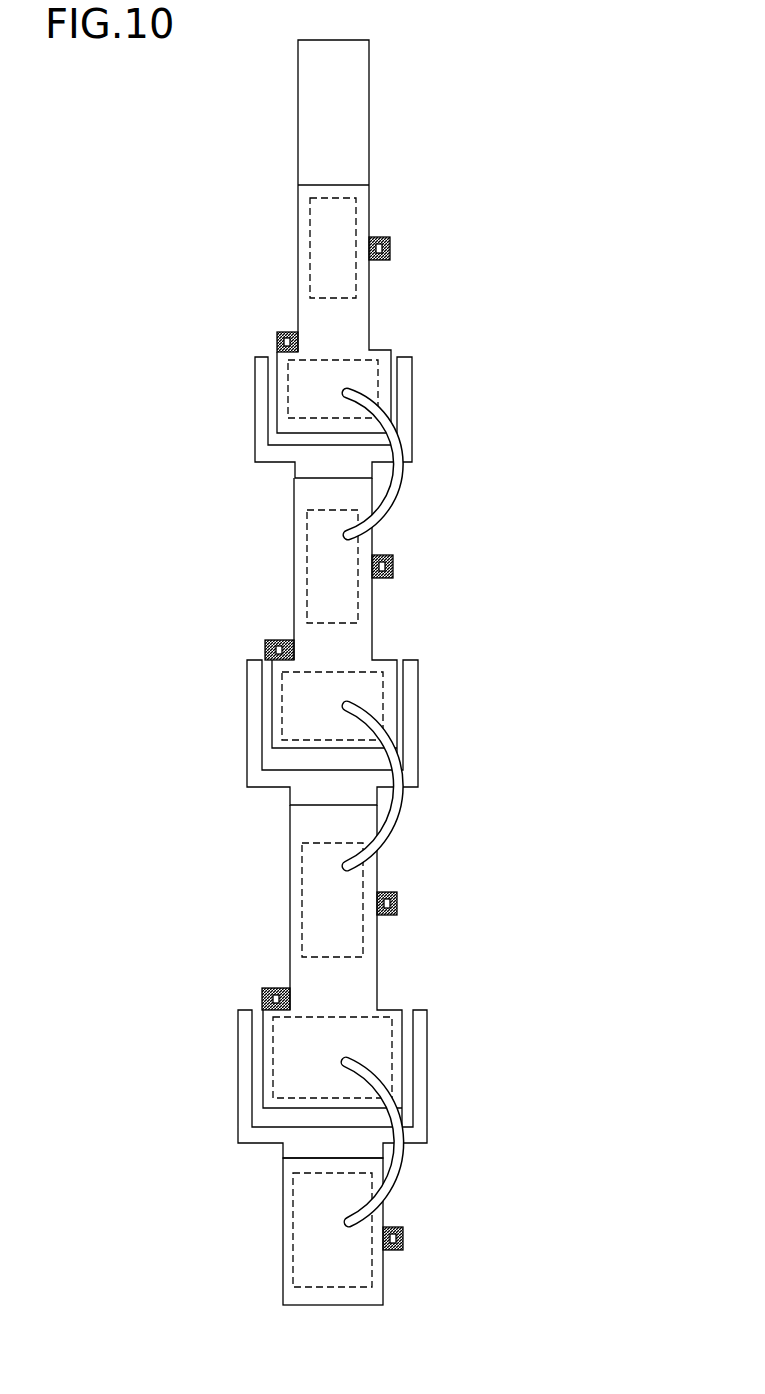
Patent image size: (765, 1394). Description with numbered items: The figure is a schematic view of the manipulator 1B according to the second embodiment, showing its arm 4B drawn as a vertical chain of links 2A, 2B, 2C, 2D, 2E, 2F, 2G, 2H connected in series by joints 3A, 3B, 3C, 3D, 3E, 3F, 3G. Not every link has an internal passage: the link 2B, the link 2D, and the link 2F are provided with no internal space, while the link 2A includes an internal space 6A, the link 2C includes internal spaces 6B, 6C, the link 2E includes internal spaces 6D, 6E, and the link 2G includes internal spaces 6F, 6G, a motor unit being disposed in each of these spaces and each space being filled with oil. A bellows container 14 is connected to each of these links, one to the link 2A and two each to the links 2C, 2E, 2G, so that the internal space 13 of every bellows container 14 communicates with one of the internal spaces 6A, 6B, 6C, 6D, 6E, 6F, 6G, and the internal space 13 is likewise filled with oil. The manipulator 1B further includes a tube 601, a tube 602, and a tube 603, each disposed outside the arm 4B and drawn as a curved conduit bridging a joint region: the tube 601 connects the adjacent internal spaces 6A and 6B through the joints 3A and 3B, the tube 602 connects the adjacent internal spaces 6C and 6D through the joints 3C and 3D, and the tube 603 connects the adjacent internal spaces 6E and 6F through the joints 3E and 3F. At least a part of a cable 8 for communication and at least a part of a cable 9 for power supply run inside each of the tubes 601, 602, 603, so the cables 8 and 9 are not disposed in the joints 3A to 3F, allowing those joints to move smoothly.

The manipulator 1B is at (523, 166).
The arm 4B is at (503, 363).
The link 2H is at (298, 104).
The link 2G is at (298, 248).
The link 2F is at (255, 412).
The link 2E is at (294, 568).
The link 2D is at (247, 722).
The link 2C is at (290, 916).
The link 2B is at (238, 1083).
The link 2A is at (283, 1268).
The joint 3G is at (294, 184).
The joint 3F is at (272, 352).
The joint 3E is at (289, 480).
The joint 3D is at (261, 660).
The joint 3C is at (286, 807).
The joint 3B is at (258, 1008).
The joint 3A is at (271, 1158).
The internal space 6G is at (309, 219).
The internal space 6F is at (381, 357).
The internal space 6E is at (306, 539).
The internal space 6D is at (382, 662).
The internal space 6C is at (301, 881).
The internal space 6B is at (385, 1010).
The internal space 6A is at (292, 1234).
The cable for communication 8 is at (435, 807).
The cable for power supply 9 is at (435, 807).
The internal space 13 is at (385, 236).
The bellows container 14 is at (392, 246).
The tube 601 is at (410, 1165).
The tube 602 is at (410, 806).
The tube 603 is at (404, 474).